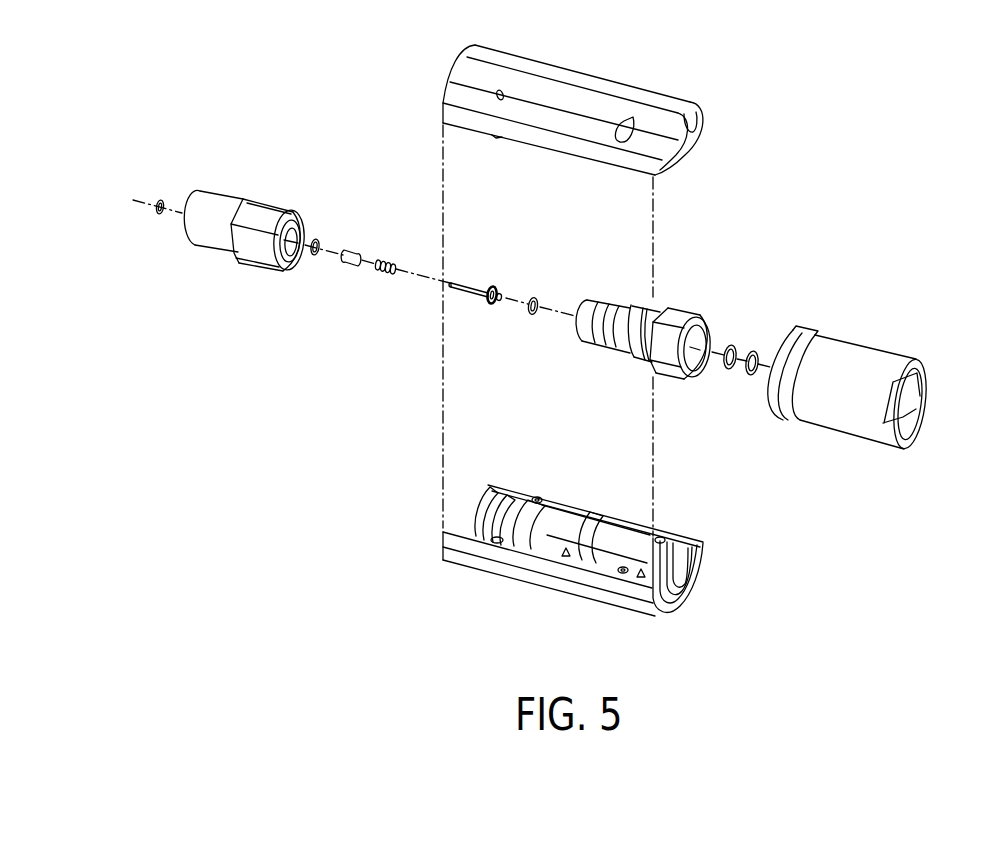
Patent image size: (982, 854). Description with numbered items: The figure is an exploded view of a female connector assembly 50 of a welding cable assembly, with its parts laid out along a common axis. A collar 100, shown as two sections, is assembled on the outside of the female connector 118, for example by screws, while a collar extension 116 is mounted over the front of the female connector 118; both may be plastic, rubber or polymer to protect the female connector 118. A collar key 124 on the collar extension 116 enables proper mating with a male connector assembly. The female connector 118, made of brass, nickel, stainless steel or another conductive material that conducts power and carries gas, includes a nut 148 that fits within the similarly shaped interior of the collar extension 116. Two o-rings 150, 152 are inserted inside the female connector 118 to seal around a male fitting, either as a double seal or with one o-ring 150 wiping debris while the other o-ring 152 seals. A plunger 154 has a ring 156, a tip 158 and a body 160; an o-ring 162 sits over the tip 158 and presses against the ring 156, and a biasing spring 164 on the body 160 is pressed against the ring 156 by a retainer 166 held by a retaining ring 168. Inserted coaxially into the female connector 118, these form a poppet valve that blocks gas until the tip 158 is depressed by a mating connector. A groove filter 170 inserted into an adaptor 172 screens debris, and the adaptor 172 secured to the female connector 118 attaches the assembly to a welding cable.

The female connector assembly 50 is at (272, 622).
The collar 100 is at (630, 88).
The collar extension 116 is at (848, 435).
The female connector 118 is at (674, 298).
The collar key 124 is at (907, 445).
The nut 148 is at (670, 375).
The o-ring 150 is at (752, 350).
The o-ring 152 is at (729, 368).
The plunger 154 is at (470, 297).
The ring 156 is at (496, 287).
The tip 158 is at (502, 293).
The body 160 is at (456, 283).
The o-ring 162 is at (535, 312).
The biasing spring 164 is at (385, 275).
The retainer 166 is at (357, 248).
The retaining ring 168 is at (313, 258).
The groove filter 170 is at (160, 200).
The adaptor 172 is at (248, 263).